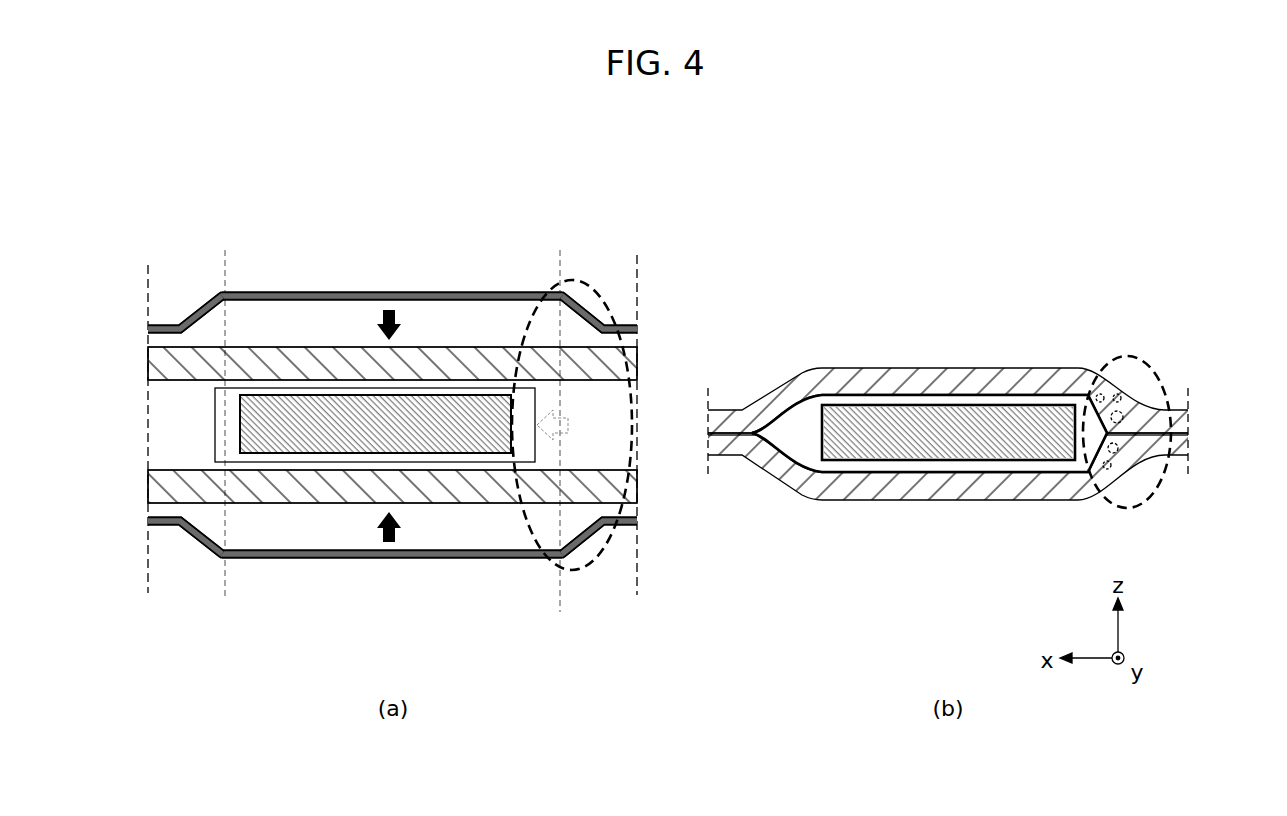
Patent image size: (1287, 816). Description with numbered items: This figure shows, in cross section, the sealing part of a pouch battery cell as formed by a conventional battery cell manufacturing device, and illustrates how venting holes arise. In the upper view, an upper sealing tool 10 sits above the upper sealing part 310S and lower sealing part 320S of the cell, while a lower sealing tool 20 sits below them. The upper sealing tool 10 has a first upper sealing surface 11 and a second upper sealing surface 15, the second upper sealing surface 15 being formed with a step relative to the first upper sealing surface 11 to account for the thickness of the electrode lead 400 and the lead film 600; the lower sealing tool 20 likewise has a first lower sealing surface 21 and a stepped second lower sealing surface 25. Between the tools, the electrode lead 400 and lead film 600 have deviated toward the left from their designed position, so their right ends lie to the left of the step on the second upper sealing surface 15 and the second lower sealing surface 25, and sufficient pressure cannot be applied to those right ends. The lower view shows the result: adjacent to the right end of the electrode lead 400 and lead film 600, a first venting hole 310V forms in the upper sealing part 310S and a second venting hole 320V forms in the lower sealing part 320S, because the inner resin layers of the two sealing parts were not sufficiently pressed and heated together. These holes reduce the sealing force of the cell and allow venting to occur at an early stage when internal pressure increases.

The upper sealing tool 10 is at (203, 150).
The first upper sealing surface 11 is at (417, 302).
The second upper sealing surface 15 is at (590, 309).
The lower sealing tool 20 is at (203, 651).
The first lower sealing surface 21 is at (348, 556).
The second lower sealing surface 25 is at (590, 543).
The lead film 600 is at (231, 407).
The electrode lead 400 is at (338, 417).
The upper sealing part 310S is at (485, 362).
The lower sealing part 320S is at (485, 488).
The first venting hole 310V is at (1125, 398).
The second venting hole 320V is at (1125, 463).